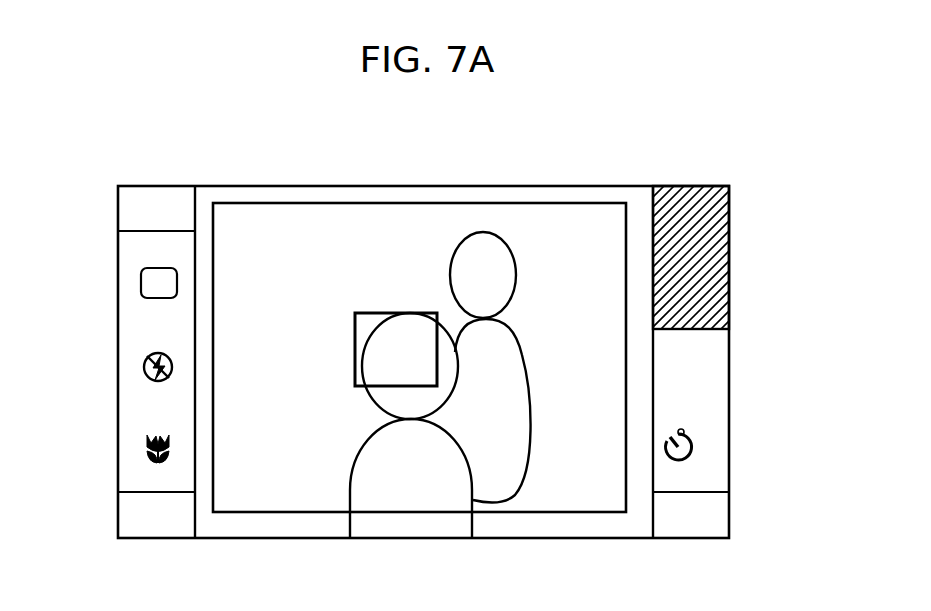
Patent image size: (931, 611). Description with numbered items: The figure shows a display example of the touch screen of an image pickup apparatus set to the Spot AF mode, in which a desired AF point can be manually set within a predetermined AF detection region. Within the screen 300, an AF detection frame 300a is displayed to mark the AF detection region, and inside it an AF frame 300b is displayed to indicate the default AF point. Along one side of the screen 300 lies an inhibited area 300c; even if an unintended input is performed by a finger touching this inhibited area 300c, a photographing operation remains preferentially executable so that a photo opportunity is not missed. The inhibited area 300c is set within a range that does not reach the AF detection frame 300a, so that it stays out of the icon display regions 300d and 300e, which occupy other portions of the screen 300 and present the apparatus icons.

The screen 300 is at (252, 186).
The AF detection frame 300a is at (488, 203).
The AF frame 300b is at (381, 313).
The inhibited area 300c is at (720, 244).
The icon display region 300d is at (140, 285).
The icon display region 300e is at (720, 447).